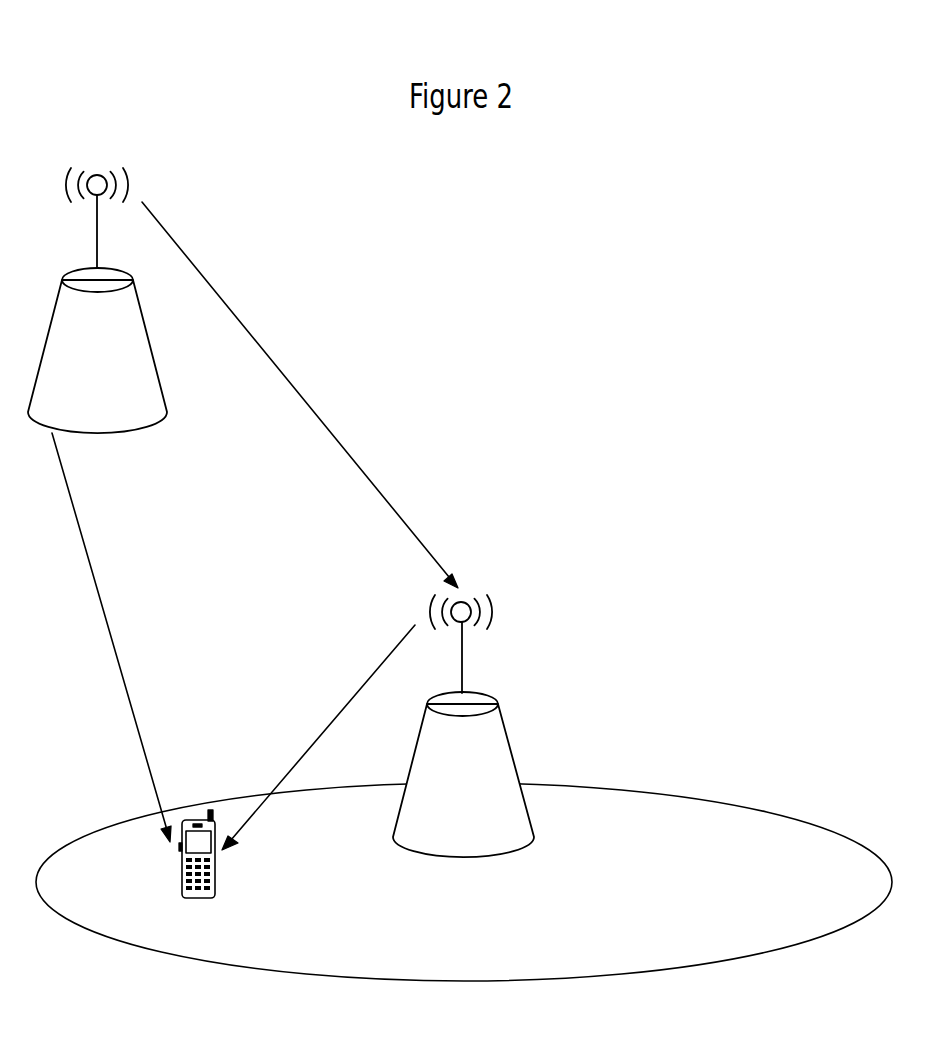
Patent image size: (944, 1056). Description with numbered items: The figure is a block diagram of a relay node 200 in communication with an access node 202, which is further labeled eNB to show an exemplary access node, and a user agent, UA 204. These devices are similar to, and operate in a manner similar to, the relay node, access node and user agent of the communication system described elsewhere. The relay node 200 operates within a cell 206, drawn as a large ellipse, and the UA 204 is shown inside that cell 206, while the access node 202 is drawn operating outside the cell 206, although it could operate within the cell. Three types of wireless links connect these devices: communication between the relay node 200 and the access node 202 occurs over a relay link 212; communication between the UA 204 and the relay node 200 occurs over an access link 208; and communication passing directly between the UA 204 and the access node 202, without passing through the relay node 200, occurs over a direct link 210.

The relay node 200 is at (462, 693).
The access node 202 is at (97, 268).
The UA 204 is at (217, 889).
The cell 206 is at (461, 981).
The access link 208 is at (321, 735).
The direct link 210 is at (108, 628).
The relay link 212 is at (298, 392).